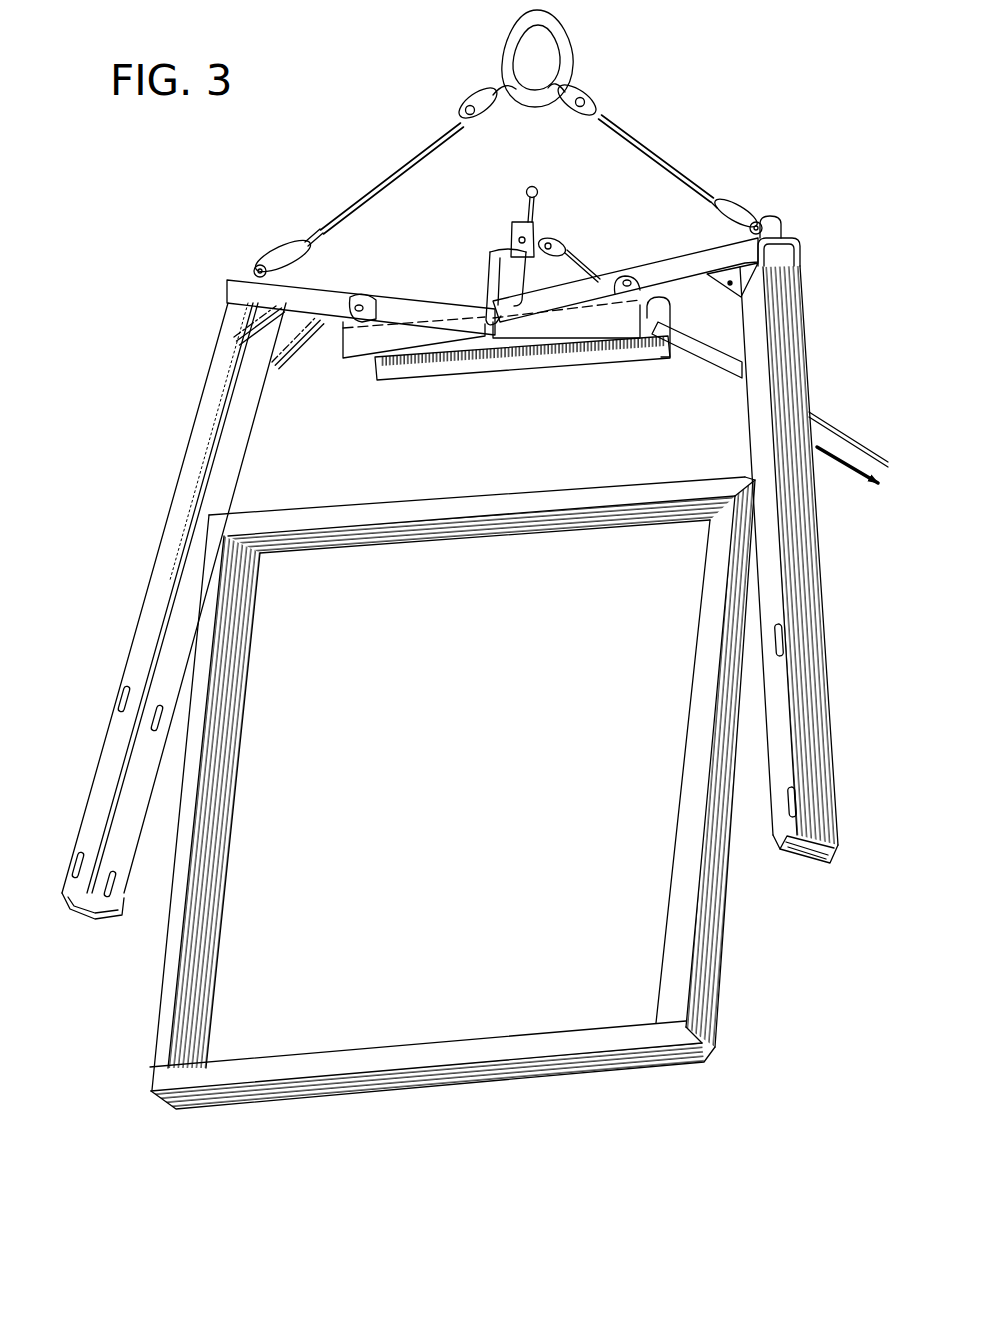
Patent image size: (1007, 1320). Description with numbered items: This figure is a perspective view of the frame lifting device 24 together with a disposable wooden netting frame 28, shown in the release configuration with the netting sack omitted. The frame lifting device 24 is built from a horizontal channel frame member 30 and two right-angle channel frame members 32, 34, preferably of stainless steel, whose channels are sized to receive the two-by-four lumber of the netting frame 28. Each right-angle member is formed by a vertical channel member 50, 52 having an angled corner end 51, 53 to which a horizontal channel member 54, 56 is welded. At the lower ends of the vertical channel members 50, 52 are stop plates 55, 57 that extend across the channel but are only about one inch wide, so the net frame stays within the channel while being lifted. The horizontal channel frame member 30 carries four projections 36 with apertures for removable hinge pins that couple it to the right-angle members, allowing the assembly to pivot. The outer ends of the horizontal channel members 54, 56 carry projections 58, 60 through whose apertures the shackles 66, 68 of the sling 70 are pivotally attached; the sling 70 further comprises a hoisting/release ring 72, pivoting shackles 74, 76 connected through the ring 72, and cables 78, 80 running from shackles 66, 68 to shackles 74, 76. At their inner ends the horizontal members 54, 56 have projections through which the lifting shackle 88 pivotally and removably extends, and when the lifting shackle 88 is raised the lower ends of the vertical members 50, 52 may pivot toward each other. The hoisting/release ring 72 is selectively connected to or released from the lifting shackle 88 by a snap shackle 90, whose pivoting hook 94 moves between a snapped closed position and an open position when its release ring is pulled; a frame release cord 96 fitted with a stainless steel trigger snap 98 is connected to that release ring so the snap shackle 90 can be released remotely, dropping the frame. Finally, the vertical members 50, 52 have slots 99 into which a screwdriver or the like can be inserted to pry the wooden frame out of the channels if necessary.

The frame lifting device 24 is at (172, 395).
The netting frame 28 is at (490, 1096).
The horizontal channel frame member 30 is at (501, 370).
The right-angle channel frame member 32 is at (223, 290).
The right-angle channel frame member 34 is at (803, 252).
The projections 36 is at (362, 298).
The vertical channel member 50 is at (167, 557).
The angled corner end 51 is at (258, 322).
The vertical channel member 52 is at (803, 590).
The angled corner end 53 is at (733, 283).
The horizontal channel member 54 is at (325, 290).
The stop plate 55 is at (102, 920).
The horizontal channel member 56 is at (674, 262).
The stop plate 57 is at (793, 853).
The projection 58 is at (255, 266).
The projection 60 is at (781, 227).
The shackle 66 is at (283, 241).
The shackle 68 is at (743, 210).
The sling 70 is at (660, 124).
The hoisting/release ring 72 is at (505, 35).
The pivoting shackle 74 is at (487, 90).
The pivoting shackle 76 is at (578, 88).
The cable 78 is at (383, 177).
The cable 80 is at (657, 157).
The lifting shackle 88 is at (495, 257).
The snap shackle 90 is at (509, 222).
The pivoting hook 94 is at (540, 184).
The frame release cord 96 is at (848, 437).
The trigger snap 98 is at (553, 243).
The slots 99 is at (118, 695).